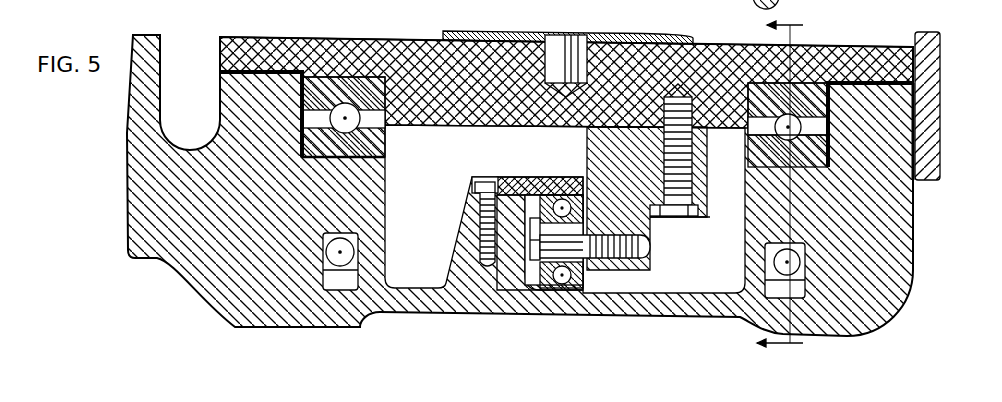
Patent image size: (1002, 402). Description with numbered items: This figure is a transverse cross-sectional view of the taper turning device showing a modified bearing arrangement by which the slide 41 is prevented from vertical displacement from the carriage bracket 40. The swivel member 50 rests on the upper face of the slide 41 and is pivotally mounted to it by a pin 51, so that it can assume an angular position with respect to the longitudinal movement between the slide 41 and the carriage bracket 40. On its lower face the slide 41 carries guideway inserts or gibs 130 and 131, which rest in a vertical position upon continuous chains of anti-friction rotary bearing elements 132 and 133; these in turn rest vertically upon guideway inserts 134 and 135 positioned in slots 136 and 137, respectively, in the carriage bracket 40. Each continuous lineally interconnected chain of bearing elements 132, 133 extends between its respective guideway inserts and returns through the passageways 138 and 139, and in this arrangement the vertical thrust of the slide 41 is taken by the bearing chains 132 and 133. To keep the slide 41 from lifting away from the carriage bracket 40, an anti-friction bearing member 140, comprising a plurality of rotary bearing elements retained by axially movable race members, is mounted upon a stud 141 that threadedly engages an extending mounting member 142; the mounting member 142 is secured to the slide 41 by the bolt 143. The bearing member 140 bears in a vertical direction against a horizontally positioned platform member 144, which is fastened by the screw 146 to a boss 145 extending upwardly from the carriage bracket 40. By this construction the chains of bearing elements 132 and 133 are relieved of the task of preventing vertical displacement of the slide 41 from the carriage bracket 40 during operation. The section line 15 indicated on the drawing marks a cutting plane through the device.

The section line 15 is at (790, 185).
The carriage bracket 40 is at (188, 265).
The slide 41 is at (388, 53).
The swivel member 50 is at (690, 43).
The pin 51 is at (561, 43).
The guideway insert or gib 130 is at (312, 78).
The guideway insert or gib 131 is at (818, 100).
The anti-friction rotary bearing elements 132 is at (347, 113).
The anti-friction rotary bearing elements 133 is at (780, 128).
The guideway insert 134 is at (377, 152).
The guideway insert 135 is at (765, 145).
The slot 136 is at (290, 137).
The slot 137 is at (833, 164).
The passageway 138 is at (350, 277).
The passageway 139 is at (778, 284).
The anti-friction bearing member 140 is at (536, 196).
The stud 141 is at (585, 273).
The mounting member 142 is at (651, 252).
The bolt 143 is at (682, 218).
The platform member 144 is at (506, 192).
The boss 145 is at (478, 206).
The screw 146 is at (485, 177).